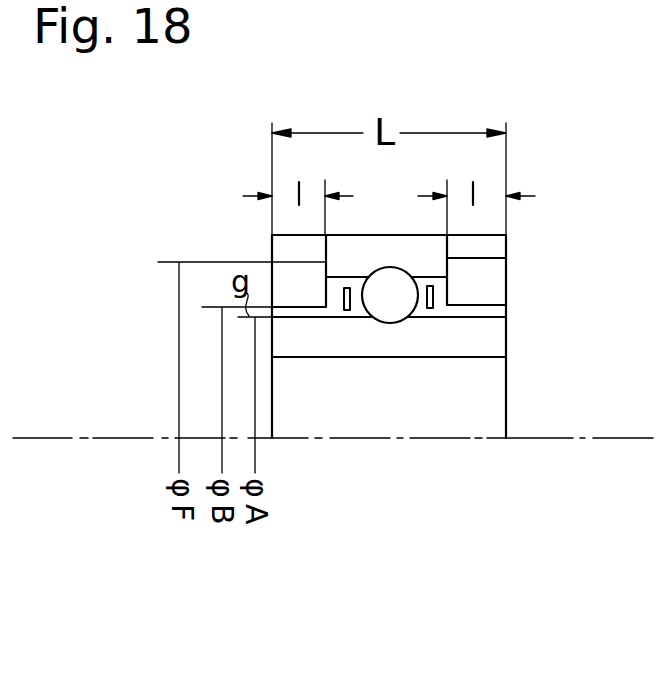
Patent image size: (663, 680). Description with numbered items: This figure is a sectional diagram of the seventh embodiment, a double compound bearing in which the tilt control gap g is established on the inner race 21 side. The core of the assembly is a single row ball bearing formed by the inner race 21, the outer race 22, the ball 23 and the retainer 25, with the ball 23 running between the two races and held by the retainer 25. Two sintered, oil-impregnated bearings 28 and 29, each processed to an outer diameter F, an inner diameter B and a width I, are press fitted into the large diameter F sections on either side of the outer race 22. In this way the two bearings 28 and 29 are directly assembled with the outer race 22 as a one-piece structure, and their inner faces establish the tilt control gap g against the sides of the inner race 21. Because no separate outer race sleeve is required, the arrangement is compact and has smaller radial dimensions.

The inner race 21 is at (487, 345).
The outer race 22 is at (487, 243).
The ball 23 is at (397, 302).
The retainer 25 is at (447, 297).
The sintered, oil-impregnated bearing 28 is at (297, 287).
The sintered, oil-impregnated bearing 29 is at (487, 274).